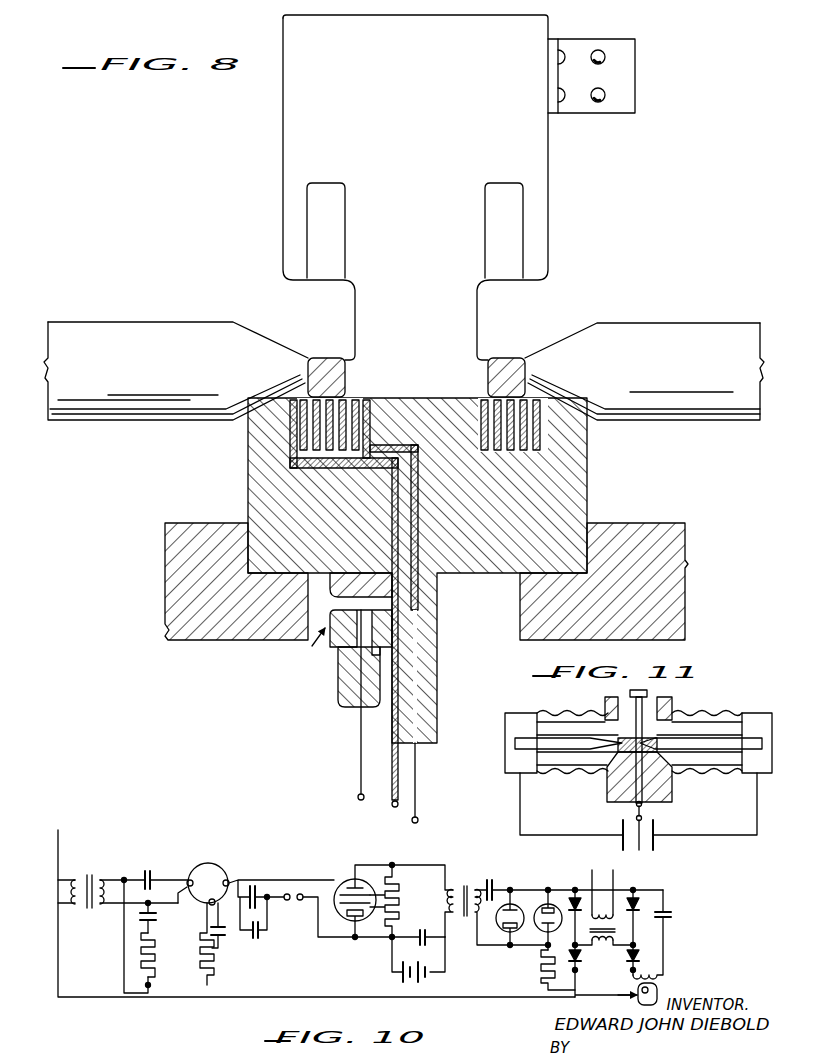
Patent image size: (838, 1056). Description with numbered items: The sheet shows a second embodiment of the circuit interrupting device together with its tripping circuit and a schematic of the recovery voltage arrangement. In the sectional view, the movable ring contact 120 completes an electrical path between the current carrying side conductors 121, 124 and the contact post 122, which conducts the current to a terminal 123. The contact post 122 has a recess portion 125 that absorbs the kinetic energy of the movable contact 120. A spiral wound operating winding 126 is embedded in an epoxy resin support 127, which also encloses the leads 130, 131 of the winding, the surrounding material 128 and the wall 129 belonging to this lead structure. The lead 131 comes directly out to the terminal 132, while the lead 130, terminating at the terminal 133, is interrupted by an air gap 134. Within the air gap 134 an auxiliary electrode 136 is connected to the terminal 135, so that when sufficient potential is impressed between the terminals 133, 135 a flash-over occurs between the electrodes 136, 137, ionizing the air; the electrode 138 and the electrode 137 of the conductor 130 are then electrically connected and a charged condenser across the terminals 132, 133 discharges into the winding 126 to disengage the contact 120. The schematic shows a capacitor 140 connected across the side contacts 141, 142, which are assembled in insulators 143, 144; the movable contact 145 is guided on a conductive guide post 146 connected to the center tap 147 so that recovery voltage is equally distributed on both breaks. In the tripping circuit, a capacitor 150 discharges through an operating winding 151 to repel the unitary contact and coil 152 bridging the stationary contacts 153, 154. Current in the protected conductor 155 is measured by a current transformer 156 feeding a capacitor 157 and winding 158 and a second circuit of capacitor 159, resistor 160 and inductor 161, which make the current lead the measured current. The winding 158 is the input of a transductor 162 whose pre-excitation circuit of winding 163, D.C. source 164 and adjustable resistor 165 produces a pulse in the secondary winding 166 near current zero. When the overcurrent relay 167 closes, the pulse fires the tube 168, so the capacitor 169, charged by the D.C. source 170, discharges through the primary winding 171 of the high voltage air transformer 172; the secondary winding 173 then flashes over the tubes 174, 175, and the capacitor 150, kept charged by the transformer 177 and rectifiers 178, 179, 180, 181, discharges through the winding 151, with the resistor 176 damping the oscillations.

In FIG. 8, the movable ring contact 120 is at (513, 358).
In FIG. 8, the current carrying side conductor 121 is at (623, 342).
In FIG. 8, the contact post 122 is at (525, 155).
In FIG. 8, the terminal 123 is at (623, 77).
In FIG. 8, the current carrying side conductor 124 is at (160, 337).
In FIG. 8, the recess portion 125 is at (508, 222).
In FIG. 8, the spiral wound operating winding 126 is at (372, 412).
In FIG. 8, the epoxy resin support 127 is at (522, 509).
In FIG. 8, the conductor 128 is at (392, 523).
In FIG. 8, the outer tube wall 129 is at (418, 513).
In FIG. 8, the lead 130 is at (391, 492).
In FIG. 8, the lead 131 is at (421, 460).
In FIG. 8, the terminal 132 is at (419, 820).
In FIG. 8, the terminal 133 is at (378, 815).
In FIG. 8, the air gap 134 is at (297, 649).
In FIG. 8, the terminal 135 is at (359, 800).
In FIG. 8, the auxiliary electrode 136 is at (340, 660).
In FIG. 8, the electrode 137 is at (361, 624).
In FIG. 8, the electrode 138 is at (332, 581).
In FIG. 11, the capacitor 140 is at (660, 842).
In FIG. 11, the side conductor or contact 141 is at (580, 737).
In FIG. 11, the side conductor or contact 142 is at (690, 738).
In FIG. 11, the insulator 143 is at (572, 773).
In FIG. 11, the insulator 144 is at (710, 773).
In FIG. 11, the movable contact 145 is at (657, 737).
In FIG. 11, the conductive guide post 146 is at (633, 712).
In FIG. 11, the center tap 147 is at (644, 817).
In FIG. 10, the capacitor 150 is at (672, 915).
In FIG. 10, the operating winding 151 is at (665, 972).
In FIG. 10, the unitary contact and coil 152 is at (658, 988).
In FIG. 10, the stationary contact 153 is at (617, 987).
In FIG. 10, the stationary contact 154 is at (660, 995).
In FIG. 10, the conductor 155 is at (60, 848).
In FIG. 10, the current transformer 156 is at (92, 908).
In FIG. 10, the capacitor 157 is at (147, 871).
In FIG. 10, the winding 158 is at (203, 873).
In FIG. 10, the capacitor 159 is at (157, 918).
In FIG. 10, the resistor 160 is at (154, 948).
In FIG. 10, the inductor 161 is at (153, 985).
In FIG. 10, the transductor 162 is at (223, 866).
In FIG. 10, the winding 163 is at (200, 863).
In FIG. 10, the D.C. source 164 is at (220, 945).
In FIG. 10, the adjustable resistor 165 is at (208, 962).
In FIG. 10, the secondary winding 166 is at (236, 882).
In FIG. 10, the overcurrent relay 167 is at (298, 905).
In FIG. 10, the tube 168 is at (341, 882).
In FIG. 10, the capacitor 169 is at (419, 931).
In FIG. 10, the D.C. source 170 is at (433, 973).
In FIG. 10, the primary winding 171 is at (452, 895).
In FIG. 10, the high voltage air transformer 172 is at (465, 889).
In FIG. 10, the secondary winding 173 is at (478, 905).
In FIG. 10, the tube 174 is at (500, 937).
In FIG. 10, the tube 175 is at (542, 934).
In FIG. 10, the resistor 176 is at (550, 968).
In FIG. 10, the transformer 177 is at (608, 907).
In FIG. 10, the rectifier 178 is at (575, 897).
In FIG. 10, the rectifier 179 is at (637, 897).
In FIG. 10, the rectifier 180 is at (583, 957).
In FIG. 10, the rectifier 181 is at (645, 952).